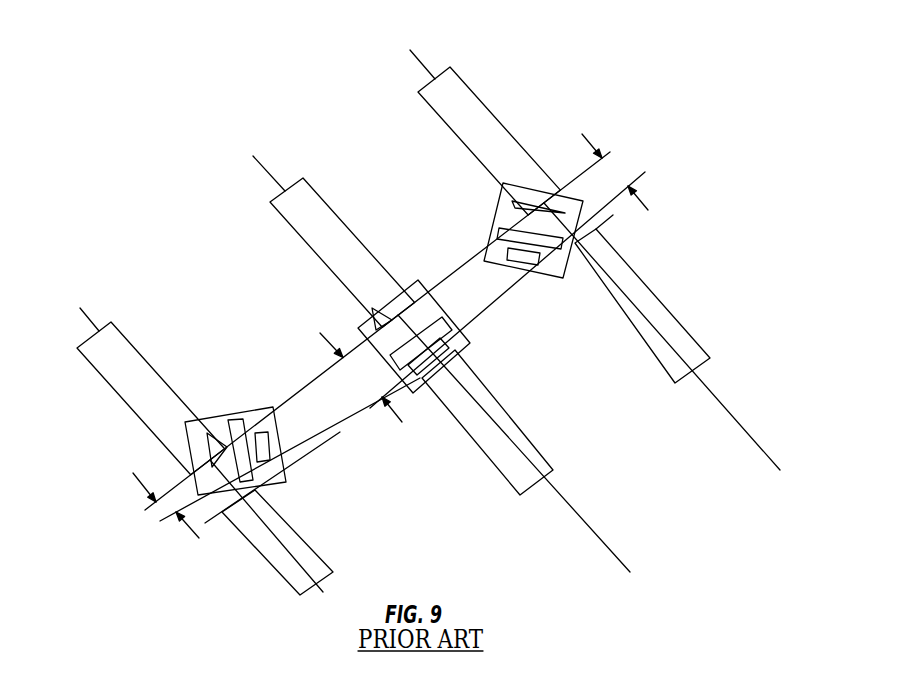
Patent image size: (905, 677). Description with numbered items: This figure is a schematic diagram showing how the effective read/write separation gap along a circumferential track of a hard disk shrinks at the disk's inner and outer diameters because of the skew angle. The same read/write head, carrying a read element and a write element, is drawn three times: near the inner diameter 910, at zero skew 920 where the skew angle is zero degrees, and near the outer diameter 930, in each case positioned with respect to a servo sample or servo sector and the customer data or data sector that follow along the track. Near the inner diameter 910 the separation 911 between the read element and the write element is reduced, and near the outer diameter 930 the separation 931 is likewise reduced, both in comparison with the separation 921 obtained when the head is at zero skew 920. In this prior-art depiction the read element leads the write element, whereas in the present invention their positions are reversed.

The inner diameter 910 is at (75, 300).
The separation near the inner diameter 911 is at (135, 480).
The zero skew 920 is at (247, 148).
The separation at zero skew 921 is at (320, 334).
The outer diameter 930 is at (404, 44).
The separation near the outer diameter 931 is at (652, 198).